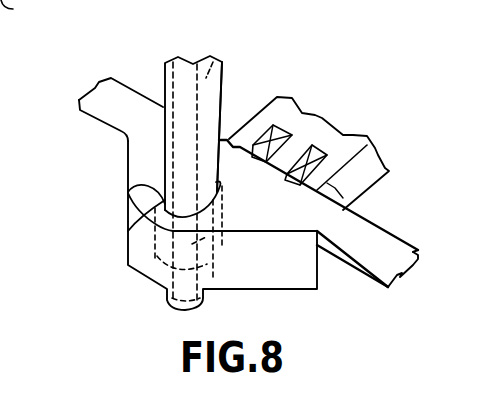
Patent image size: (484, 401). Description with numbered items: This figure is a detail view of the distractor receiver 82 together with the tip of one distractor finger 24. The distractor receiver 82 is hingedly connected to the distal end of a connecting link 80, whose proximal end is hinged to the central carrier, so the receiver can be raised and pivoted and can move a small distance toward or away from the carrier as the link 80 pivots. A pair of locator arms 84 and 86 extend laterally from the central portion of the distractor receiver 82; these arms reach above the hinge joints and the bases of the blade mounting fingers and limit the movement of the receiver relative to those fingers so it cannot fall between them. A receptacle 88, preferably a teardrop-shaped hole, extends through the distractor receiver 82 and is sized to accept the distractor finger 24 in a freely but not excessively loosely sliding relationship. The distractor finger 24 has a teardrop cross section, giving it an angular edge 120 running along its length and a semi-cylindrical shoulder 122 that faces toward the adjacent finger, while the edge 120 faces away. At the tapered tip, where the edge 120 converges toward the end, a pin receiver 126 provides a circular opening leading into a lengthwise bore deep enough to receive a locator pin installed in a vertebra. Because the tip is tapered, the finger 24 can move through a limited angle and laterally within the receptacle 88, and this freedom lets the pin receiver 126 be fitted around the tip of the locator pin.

The distractor finger 24 is at (164, 80).
The connecting link 80 is at (351, 142).
The distractor receiver 82 is at (263, 272).
The locator arm 84 is at (110, 90).
The locator arm 86 is at (383, 243).
The receptacle 88 is at (128, 193).
The angular edge 120 is at (222, 80).
The semi-cylindrical shoulder 122 is at (128, 232).
The pin receiver 126 is at (208, 50).